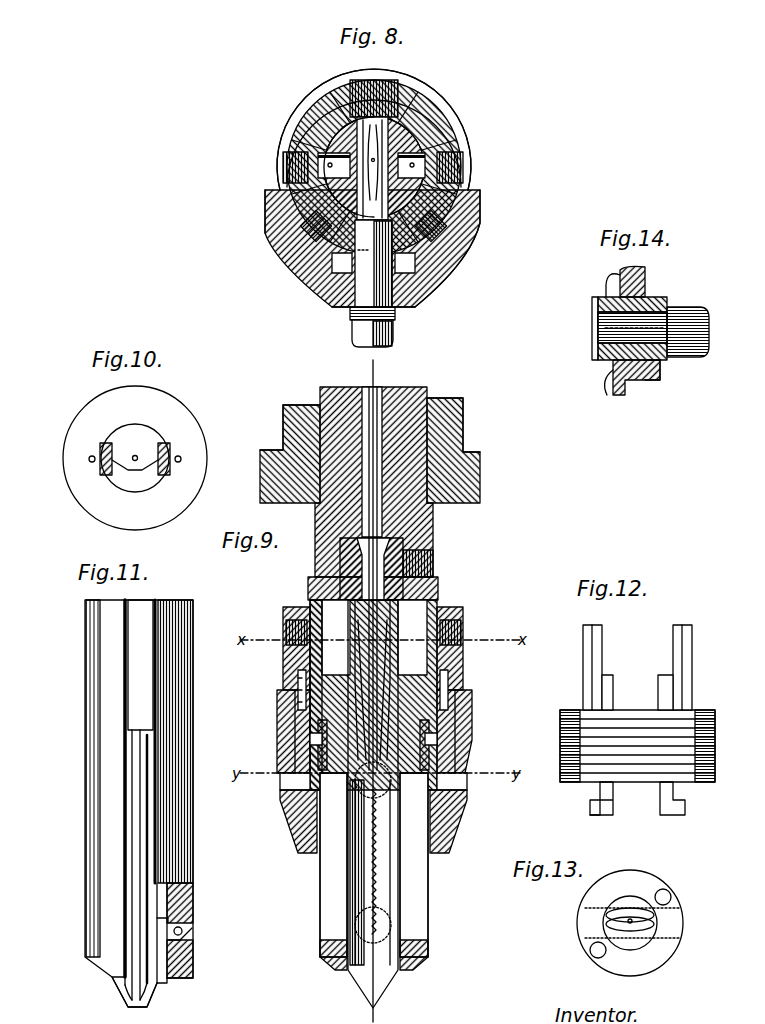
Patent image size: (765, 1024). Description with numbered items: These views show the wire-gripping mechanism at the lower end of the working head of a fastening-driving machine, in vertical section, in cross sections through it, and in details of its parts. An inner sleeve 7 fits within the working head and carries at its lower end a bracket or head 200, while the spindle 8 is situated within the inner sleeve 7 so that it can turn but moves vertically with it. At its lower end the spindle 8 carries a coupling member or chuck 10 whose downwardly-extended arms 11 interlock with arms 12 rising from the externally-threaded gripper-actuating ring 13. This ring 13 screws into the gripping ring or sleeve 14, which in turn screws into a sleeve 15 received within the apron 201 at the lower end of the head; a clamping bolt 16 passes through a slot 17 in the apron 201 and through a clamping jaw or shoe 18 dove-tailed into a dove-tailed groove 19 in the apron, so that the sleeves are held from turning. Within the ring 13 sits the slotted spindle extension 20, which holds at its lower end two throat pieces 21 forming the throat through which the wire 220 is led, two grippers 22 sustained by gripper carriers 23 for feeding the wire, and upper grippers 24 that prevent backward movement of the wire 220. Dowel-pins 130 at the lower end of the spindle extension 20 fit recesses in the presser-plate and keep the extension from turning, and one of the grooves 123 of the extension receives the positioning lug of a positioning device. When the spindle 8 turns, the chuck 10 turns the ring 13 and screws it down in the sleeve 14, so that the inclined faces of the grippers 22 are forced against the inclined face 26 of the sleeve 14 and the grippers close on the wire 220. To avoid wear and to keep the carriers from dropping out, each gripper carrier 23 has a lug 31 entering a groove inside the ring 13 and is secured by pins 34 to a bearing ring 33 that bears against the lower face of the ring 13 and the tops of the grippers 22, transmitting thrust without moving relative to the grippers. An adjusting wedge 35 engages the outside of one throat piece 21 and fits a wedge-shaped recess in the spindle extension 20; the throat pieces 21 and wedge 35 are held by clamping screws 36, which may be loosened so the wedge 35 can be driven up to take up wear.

In FIG. 9, the inner sleeve 7 is at (290, 408).
In FIG. 9, the spindle 8 is at (333, 395).
In FIG. 9, the coupling member or chuck 10 is at (405, 585).
In FIG. 8, the downwardly-extended arms 11 is at (310, 135).
In FIG. 9, the downwardly-extended arms 11 is at (318, 657).
In FIG. 8, the arms 12 is at (430, 120).
In FIG. 9, the arms 12 is at (295, 625).
In FIG. 12, the arms 12 is at (676, 640).
In FIG. 9, the gripper-actuating ring 13 is at (292, 750).
In FIG. 12, the gripper-actuating ring 13 is at (716, 738).
In FIG. 9, the gripping ring or sleeve 14 is at (285, 820).
In FIG. 8, the sleeve 15 is at (410, 155).
In FIG. 14, the sleeve 15 is at (624, 396).
In FIG. 9, the sleeve 15 is at (478, 712).
In FIG. 8, the clamping bolt 16 is at (360, 275).
In FIG. 14, the clamping bolt 16 is at (660, 325).
In FIG. 8, the slot 17 is at (440, 280).
In FIG. 8, the clamping jaw or shoe 18 is at (396, 310).
In FIG. 14, the clamping jaw or shoe 18 is at (665, 305).
In FIG. 8, the dove-tailed groove 19 is at (462, 250).
In FIG. 14, the dove-tailed groove 19 is at (648, 380).
In FIG. 8, the spindle extension 20 is at (440, 128).
In FIG. 11, the spindle extension 20 is at (80, 892).
In FIG. 9, the spindle extension 20 is at (315, 947).
In FIG. 13, the spindle extension 20 is at (668, 948).
In FIG. 11, the throat pieces 21 is at (115, 990).
In FIG. 9, the throat pieces 21 is at (365, 997).
In FIG. 13, the throat pieces 21 is at (628, 935).
In FIG. 10, the grippers 22 is at (120, 445).
In FIG. 9, the grippers 22 is at (340, 872).
In FIG. 8, the gripper carriers 23 is at (350, 166).
In FIG. 10, the gripper carriers 23 is at (100, 447).
In FIG. 9, the gripper carriers 23 is at (297, 690).
In FIG. 12, the gripper carriers 23 is at (660, 688).
In FIG. 8, the upper grippers 24 is at (328, 170).
In FIG. 9, the upper grippers 24 is at (345, 645).
In FIG. 9, the inclined face 26 is at (305, 840).
In FIG. 9, the lug 31 is at (308, 740).
In FIG. 10, the bearing ring 33 is at (78, 500).
In FIG. 9, the bearing ring 33 is at (290, 787).
In FIG. 12, the bearing ring 33 is at (680, 785).
In FIG. 10, the pins 34 is at (90, 458).
In FIG. 9, the pins 34 is at (300, 706).
In FIG. 11, the adjusting wedge 35 is at (193, 965).
In FIG. 13, the adjusting wedge 35 is at (645, 955).
In FIG. 11, the clamping screws 36 is at (183, 915).
In FIG. 9, the clamping screws 36 is at (355, 921).
In FIG. 11, the grooves 123 is at (135, 642).
In FIG. 13, the dowel-pins 130 is at (668, 895).
In FIG. 9, the bracket or head 200 is at (482, 470).
In FIG. 8, the apron 201 is at (292, 245).
In FIG. 14, the apron 201 is at (645, 280).
In FIG. 8, the wire 220 is at (395, 112).
In FIG. 10, the wire 220 is at (135, 455).
In FIG. 9, the wire 220 is at (378, 385).